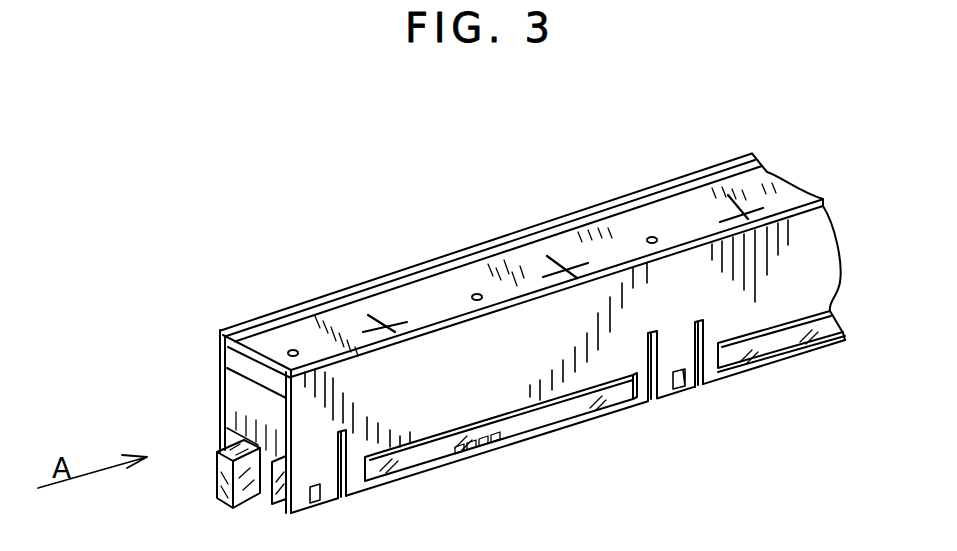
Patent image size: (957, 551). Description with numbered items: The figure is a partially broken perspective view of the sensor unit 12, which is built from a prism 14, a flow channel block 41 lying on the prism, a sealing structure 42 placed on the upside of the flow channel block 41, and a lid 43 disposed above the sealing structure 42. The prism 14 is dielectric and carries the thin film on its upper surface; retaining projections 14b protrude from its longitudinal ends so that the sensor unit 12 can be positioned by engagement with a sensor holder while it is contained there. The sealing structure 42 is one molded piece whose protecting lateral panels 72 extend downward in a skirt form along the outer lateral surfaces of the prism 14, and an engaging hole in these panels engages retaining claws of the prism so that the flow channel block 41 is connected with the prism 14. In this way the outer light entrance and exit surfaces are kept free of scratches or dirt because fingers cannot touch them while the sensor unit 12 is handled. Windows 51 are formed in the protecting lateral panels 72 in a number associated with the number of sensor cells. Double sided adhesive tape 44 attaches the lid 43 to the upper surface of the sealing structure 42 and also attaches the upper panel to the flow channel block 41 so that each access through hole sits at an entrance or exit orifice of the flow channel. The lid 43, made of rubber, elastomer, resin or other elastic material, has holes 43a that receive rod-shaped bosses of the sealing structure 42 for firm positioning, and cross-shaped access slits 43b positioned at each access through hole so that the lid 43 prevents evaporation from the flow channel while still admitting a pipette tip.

The sensor unit 12 is at (432, 150).
The prism 14 is at (260, 507).
The retaining projections 14b is at (217, 480).
The flow channel block 41 is at (244, 411).
The sealing structure 42 is at (830, 218).
The lid 43 is at (258, 348).
The holes 43a is at (380, 314).
The access slit 43b is at (294, 350).
The double sided adhesive tape 44 is at (226, 361).
The windows 51 is at (518, 422).
The protecting lateral panels 72 is at (805, 357).